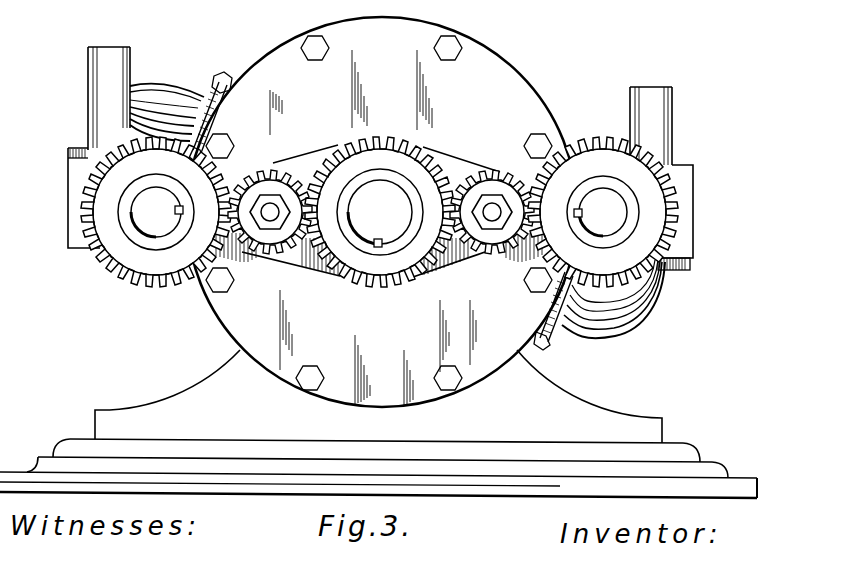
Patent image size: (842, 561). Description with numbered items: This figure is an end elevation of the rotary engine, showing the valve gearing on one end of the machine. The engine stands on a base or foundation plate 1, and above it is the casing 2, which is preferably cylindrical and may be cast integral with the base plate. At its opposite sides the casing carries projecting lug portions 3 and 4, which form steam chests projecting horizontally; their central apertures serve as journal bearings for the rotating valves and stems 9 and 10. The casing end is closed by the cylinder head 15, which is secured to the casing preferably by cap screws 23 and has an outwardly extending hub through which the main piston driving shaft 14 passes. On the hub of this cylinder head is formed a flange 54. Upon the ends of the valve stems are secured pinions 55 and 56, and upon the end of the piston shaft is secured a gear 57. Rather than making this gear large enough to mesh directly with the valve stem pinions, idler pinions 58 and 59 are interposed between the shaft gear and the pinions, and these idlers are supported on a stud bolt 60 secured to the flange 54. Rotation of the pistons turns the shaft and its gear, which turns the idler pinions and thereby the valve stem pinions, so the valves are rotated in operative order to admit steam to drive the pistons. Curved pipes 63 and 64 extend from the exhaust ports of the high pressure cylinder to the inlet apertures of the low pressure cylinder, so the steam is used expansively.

The base or foundation plate 1 is at (587, 422).
The casing 2 is at (222, 330).
The projecting lug portion 3 is at (68, 228).
The projecting lug portion 4 is at (683, 234).
The rotating valve and stem 9 is at (156, 212).
The rotating valve and stem 10 is at (603, 212).
The main piston driving shaft 14 is at (380, 212).
The cylinder head 15 is at (486, 78).
The cap screws 23 is at (314, 62).
The flange 54 is at (447, 168).
The pinion 55 is at (130, 252).
The pinion 56 is at (632, 263).
The gear 57 is at (373, 163).
The idler pinion 58 is at (262, 240).
The idler pinion 59 is at (481, 252).
The stud bolt 60 is at (270, 208).
The curved pipe 63 is at (152, 94).
The curved pipe 64 is at (630, 330).